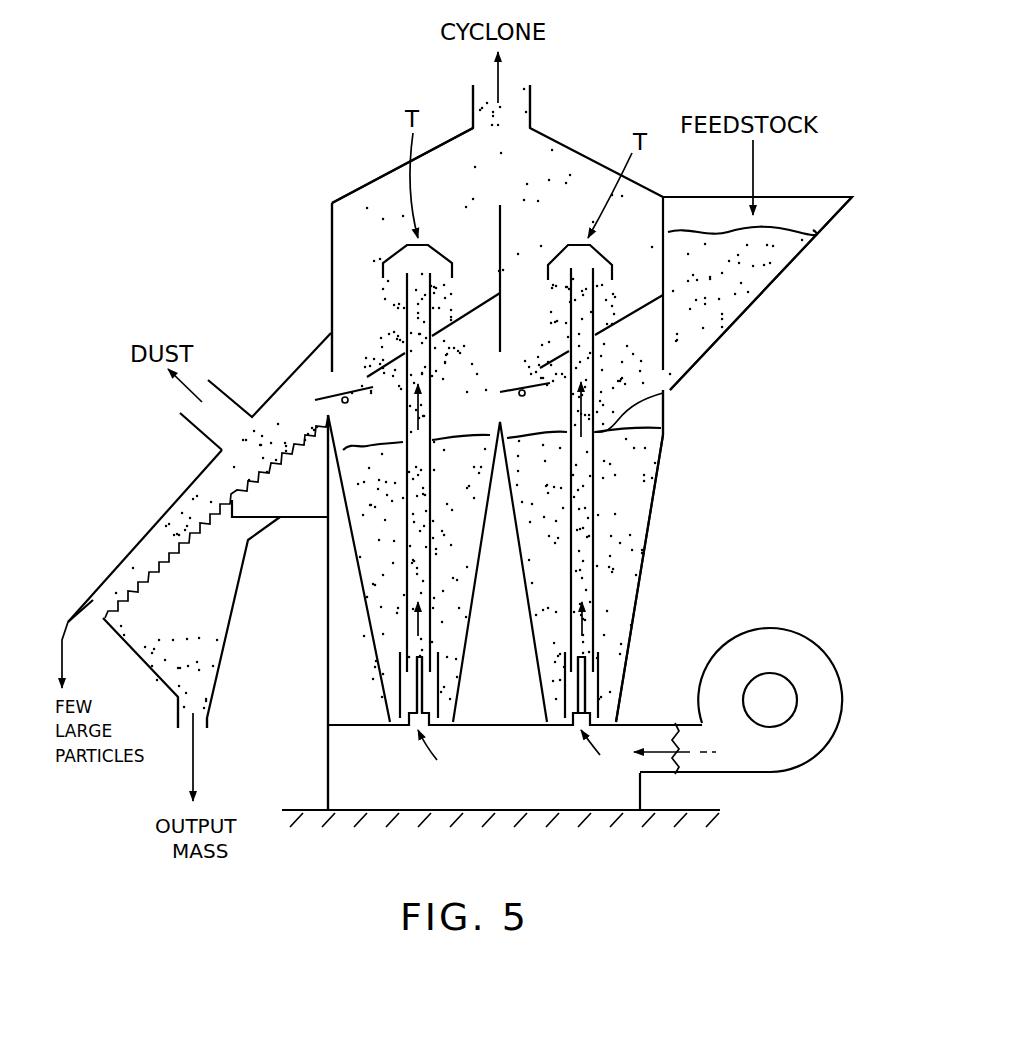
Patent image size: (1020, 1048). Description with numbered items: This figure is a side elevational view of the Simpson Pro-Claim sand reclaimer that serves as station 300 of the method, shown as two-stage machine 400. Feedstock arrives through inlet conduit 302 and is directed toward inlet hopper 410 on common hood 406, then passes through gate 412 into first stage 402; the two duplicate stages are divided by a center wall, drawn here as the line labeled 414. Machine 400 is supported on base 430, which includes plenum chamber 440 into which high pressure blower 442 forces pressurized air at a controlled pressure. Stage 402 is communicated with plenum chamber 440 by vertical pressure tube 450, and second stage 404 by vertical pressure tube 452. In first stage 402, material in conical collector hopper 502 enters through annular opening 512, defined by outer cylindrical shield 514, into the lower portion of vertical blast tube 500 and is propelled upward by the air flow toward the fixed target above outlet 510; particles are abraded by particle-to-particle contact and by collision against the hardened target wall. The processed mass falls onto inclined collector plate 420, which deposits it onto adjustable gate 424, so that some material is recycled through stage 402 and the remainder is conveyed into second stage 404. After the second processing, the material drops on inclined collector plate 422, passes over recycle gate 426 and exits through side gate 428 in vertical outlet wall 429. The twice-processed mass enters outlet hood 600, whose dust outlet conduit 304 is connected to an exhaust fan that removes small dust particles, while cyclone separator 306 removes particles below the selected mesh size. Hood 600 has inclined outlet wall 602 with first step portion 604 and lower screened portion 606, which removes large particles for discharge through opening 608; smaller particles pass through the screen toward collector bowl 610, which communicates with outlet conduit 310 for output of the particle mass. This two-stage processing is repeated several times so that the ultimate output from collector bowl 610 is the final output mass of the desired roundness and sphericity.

The station 300 is at (640, 69).
The inlet conduit 302 is at (807, 193).
The dust outlet conduit 304 is at (232, 393).
The cyclone separator 306 is at (530, 93).
The outlet conduit 310 is at (207, 707).
The machine 400 is at (582, 145).
The first stage 402 is at (645, 574).
The second stage 404 is at (363, 594).
The common hood 406 is at (378, 177).
The inlet hopper 410 is at (757, 300).
The gate 412 is at (670, 382).
The central divider 414 is at (500, 225).
The inclined collector plate 420 is at (647, 303).
The inclined collector plate 422 is at (462, 322).
The adjustable gate 424 is at (537, 388).
The recycle gate 426 is at (333, 397).
The side gate 428 is at (363, 378).
The vertical outlet wall 429 is at (327, 563).
The base 430 is at (693, 810).
The plenum chamber 440 is at (612, 772).
The high pressure blower 442 is at (797, 632).
The vertical pressure tube 450 is at (598, 688).
The vertical pressure tube 452 is at (417, 688).
The vertical blast tube 500 is at (593, 482).
The conical collector hopper 502 is at (650, 523).
The outlet 510 is at (582, 267).
The annular opening 512 is at (598, 653).
The outer cylindrical shield 514 is at (563, 678).
The outlet hood 600 is at (163, 508).
The inclined outlet wall 602 is at (231, 493).
The first step portion 604 is at (270, 472).
The lower screened portion 606 is at (158, 577).
The opening 608 is at (77, 612).
The collector bowl 610 is at (140, 656).